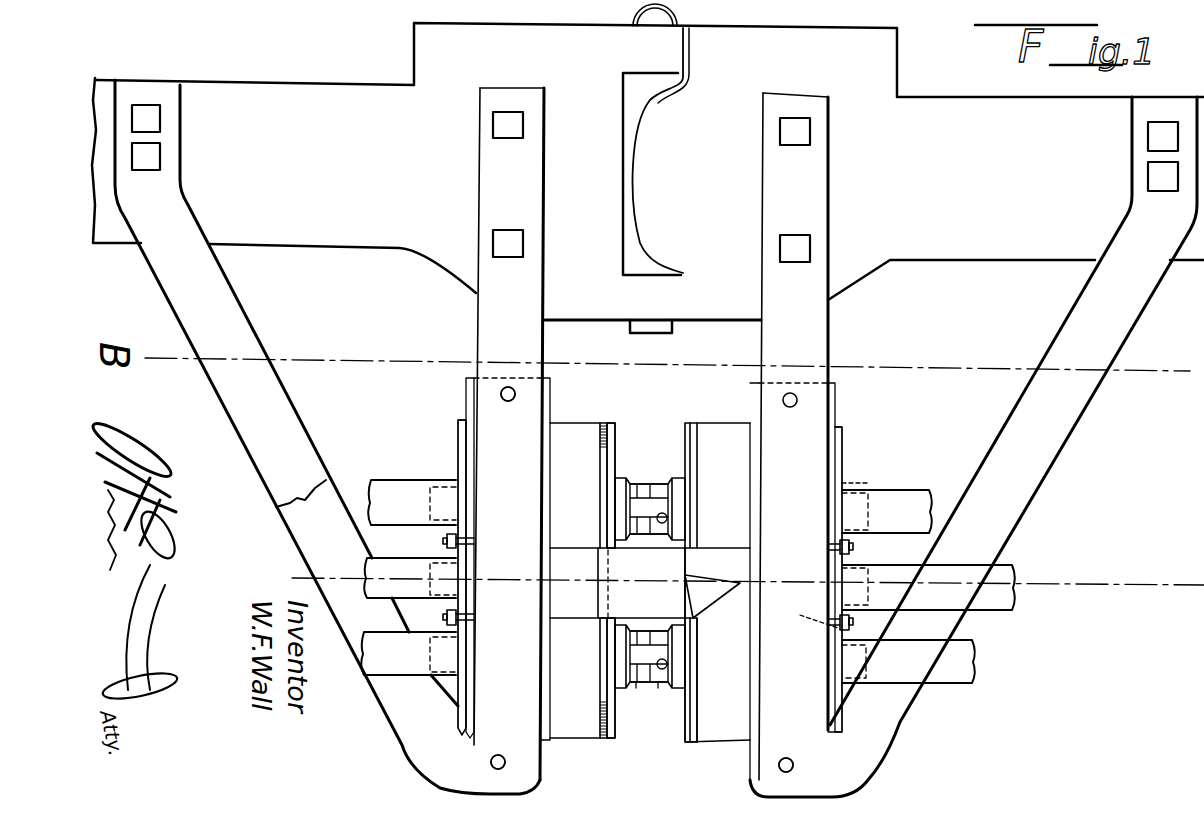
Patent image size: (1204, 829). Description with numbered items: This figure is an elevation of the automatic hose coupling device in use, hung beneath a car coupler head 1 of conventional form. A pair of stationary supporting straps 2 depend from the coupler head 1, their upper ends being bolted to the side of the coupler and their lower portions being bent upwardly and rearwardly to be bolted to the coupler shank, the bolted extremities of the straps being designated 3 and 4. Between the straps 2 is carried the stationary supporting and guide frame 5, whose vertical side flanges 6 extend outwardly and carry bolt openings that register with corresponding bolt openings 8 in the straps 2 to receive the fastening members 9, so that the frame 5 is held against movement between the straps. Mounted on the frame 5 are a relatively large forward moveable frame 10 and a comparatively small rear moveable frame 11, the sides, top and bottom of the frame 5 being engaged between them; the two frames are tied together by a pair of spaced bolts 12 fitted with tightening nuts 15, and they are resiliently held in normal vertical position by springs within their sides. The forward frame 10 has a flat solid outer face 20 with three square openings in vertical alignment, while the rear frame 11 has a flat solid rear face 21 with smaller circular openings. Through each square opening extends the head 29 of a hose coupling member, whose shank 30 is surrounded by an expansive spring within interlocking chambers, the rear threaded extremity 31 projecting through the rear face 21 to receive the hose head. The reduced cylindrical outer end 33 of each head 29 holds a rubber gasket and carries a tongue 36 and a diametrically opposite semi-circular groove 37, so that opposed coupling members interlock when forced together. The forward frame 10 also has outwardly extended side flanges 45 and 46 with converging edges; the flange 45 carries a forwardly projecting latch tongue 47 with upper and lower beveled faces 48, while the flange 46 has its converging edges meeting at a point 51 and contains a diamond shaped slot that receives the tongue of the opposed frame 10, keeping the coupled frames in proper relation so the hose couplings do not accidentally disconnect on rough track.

The car coupler head 1 is at (573, 305).
The stationary supporting strap 2 is at (845, 327).
The bolted extremity of supporting strap 3 is at (507, 233).
The bolted extremity of supporting strap 4 is at (160, 158).
The stationary supporting and guide frame 5 is at (336, 570).
The vertical side flange 6 is at (462, 390).
The bolt opening 8 is at (526, 397).
The fastening member 9 is at (790, 393).
The forward moveable frame 10 is at (590, 421).
The rear moveable frame 11 is at (838, 445).
The bolt 12 is at (443, 541).
The tightening nut 15 is at (459, 527).
The flat solid outer face 20 is at (685, 440).
The flat solid rear face 21 is at (457, 443).
The head of hose coupling member 29 is at (620, 515).
The shank 30 is at (872, 483).
The rear threaded extremity 31 is at (428, 503).
The reduced outer end of head 33 is at (640, 688).
The tongue 36 is at (668, 500).
The semi-circular groove 37 is at (665, 514).
The side flange 45 is at (600, 458).
The side flange 46 is at (695, 713).
The latch tongue 47 is at (622, 622).
The beveled face 48 is at (705, 612).
The point 51 is at (690, 576).